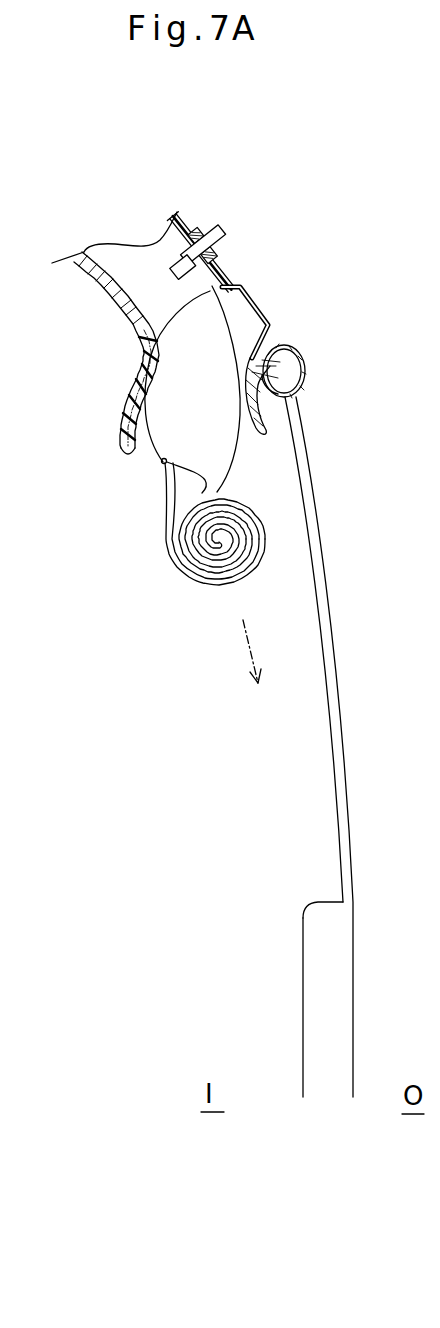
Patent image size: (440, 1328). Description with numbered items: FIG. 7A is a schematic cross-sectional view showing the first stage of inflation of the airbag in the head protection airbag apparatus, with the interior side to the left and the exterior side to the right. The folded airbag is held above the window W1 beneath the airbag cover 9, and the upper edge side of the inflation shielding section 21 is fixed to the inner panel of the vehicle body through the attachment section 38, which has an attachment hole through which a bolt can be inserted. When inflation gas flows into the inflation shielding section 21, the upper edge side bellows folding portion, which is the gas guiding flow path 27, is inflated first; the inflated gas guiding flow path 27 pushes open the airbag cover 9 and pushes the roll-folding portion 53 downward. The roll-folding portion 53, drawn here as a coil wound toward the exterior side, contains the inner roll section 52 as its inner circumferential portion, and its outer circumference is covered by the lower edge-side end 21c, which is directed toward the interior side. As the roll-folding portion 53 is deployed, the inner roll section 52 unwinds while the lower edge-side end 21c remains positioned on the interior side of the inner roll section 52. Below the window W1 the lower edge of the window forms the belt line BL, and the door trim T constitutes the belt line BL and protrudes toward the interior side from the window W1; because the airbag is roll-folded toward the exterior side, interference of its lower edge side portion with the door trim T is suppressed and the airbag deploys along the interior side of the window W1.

The airbag cover 9 is at (118, 440).
The attachment section 38 is at (177, 240).
The gas guiding flow path 27 is at (234, 322).
The lower edge-side end 21c is at (162, 462).
The inflation shielding section 21 is at (120, 593).
The inner roll section 52 is at (268, 562).
The roll-folding portion 53 is at (183, 592).
The window W1 is at (320, 553).
The belt line BL is at (312, 902).
The door trim T is at (307, 922).